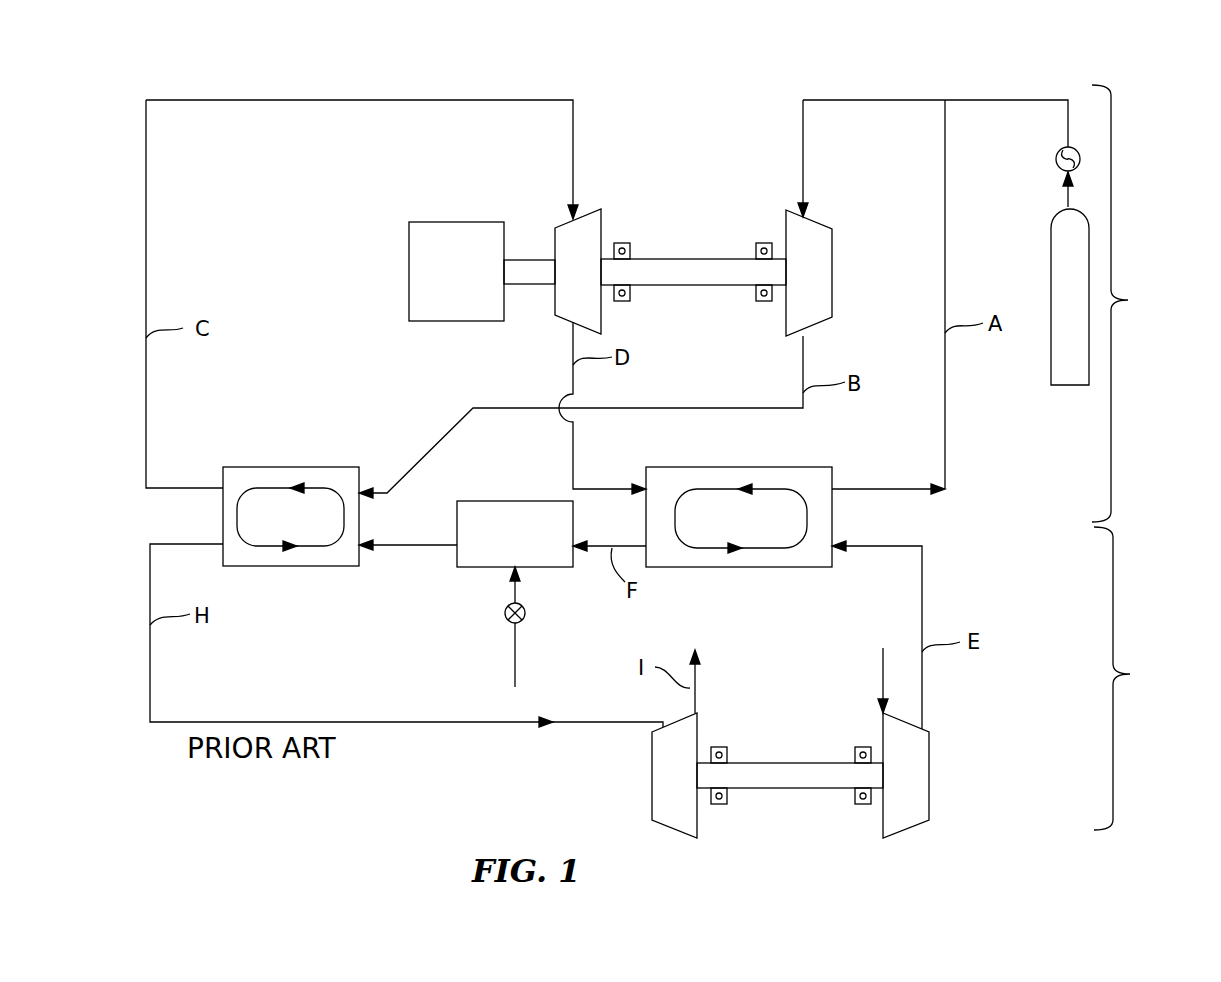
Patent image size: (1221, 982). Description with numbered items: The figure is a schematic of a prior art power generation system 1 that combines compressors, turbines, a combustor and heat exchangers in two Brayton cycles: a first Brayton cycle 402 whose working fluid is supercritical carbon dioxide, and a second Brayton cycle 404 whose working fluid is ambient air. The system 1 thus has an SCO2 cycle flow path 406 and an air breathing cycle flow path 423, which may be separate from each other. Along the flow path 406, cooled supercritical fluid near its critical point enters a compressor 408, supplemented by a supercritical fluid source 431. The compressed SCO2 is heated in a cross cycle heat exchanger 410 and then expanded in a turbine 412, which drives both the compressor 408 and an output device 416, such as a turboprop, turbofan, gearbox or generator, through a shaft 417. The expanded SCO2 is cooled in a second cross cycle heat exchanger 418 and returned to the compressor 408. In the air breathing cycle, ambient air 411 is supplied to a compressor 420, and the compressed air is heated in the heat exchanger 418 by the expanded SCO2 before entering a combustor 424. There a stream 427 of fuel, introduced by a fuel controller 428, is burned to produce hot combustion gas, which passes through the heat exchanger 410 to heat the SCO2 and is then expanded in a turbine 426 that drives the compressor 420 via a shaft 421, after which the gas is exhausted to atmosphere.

The power generation system 1 is at (304, 88).
The first Brayton cycle 402 is at (1136, 303).
The second Brayton cycle 404 is at (1136, 678).
The SCO2 cycle flow path 406 is at (945, 420).
The compressor 408 is at (809, 273).
The cross cycle heat exchanger 410 is at (291, 516).
The ambient air 411 is at (878, 670).
The turbine 412 is at (578, 271).
The output device 416 is at (456, 271).
The shaft 417 is at (530, 260).
The second cross cycle heat exchanger 418 is at (739, 517).
The compressor 420 is at (906, 775).
The shaft 421 is at (793, 762).
The air breathing cycle flow path 423 is at (907, 543).
The combustor 424 is at (515, 534).
The turbine 426 is at (674, 775).
The stream of fuel 427 is at (510, 593).
The fuel controller 428 is at (505, 614).
The supercritical fluid source 431 is at (1065, 265).